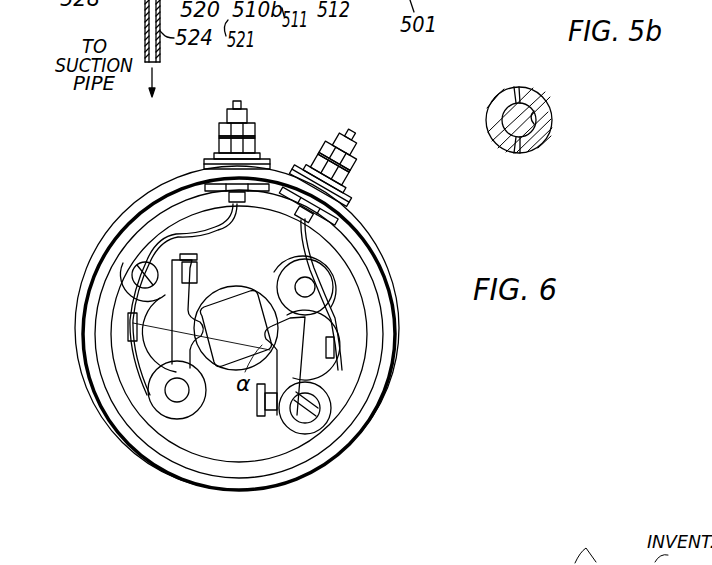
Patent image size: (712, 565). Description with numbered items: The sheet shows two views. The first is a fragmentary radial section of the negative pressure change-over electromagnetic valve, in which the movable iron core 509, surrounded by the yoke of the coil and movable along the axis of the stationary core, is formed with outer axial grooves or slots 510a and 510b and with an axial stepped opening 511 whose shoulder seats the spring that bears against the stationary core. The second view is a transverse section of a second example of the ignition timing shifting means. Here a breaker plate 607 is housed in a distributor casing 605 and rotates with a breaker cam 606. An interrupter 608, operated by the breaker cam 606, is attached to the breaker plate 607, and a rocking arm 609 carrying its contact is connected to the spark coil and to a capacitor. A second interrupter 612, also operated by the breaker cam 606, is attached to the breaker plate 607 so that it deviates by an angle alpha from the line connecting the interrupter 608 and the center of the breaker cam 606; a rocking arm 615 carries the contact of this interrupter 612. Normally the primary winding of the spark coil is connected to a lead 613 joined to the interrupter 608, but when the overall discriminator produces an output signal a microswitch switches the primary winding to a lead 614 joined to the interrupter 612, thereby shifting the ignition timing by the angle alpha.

In FIG. 5b, the movable iron core 509 is at (552, 101).
In FIG. 5b, the outer axial groove 510a is at (517, 88).
In FIG. 5b, the outer axial groove 510b is at (517, 153).
In FIG. 5b, the axial stepped opening 511 is at (538, 124).
In FIG. 6, the distributor casing 605 is at (83, 285).
In FIG. 6, the breaker cam 606 is at (360, 290).
In FIG. 6, the breaker plate 607 is at (190, 180).
In FIG. 6, the interrupter 608 is at (190, 215).
In FIG. 6, the rocking arm 609 is at (172, 310).
In FIG. 6, the interrupter 612 is at (275, 428).
In FIG. 6, the lead 613 is at (240, 102).
In FIG. 6, the lead 614 is at (353, 131).
In FIG. 6, the rocking arm 615 is at (386, 359).